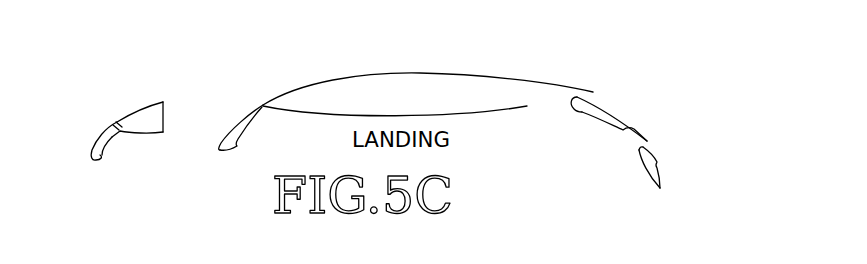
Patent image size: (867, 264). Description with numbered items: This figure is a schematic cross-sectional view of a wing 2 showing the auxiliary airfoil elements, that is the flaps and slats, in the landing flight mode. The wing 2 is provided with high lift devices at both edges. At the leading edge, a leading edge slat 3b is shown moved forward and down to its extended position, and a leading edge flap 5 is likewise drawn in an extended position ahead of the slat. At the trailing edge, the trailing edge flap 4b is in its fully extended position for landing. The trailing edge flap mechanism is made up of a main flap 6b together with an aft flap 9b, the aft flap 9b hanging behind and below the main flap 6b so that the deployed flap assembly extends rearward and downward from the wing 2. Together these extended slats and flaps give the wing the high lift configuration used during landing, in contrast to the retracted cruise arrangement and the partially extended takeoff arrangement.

The wing 2 is at (413, 82).
The leading edge slat 3b is at (237, 117).
The trailing edge flap 4b is at (627, 96).
The leading edge flap 5 is at (100, 132).
The main flap 6b is at (595, 121).
The aft flap 9b is at (657, 163).